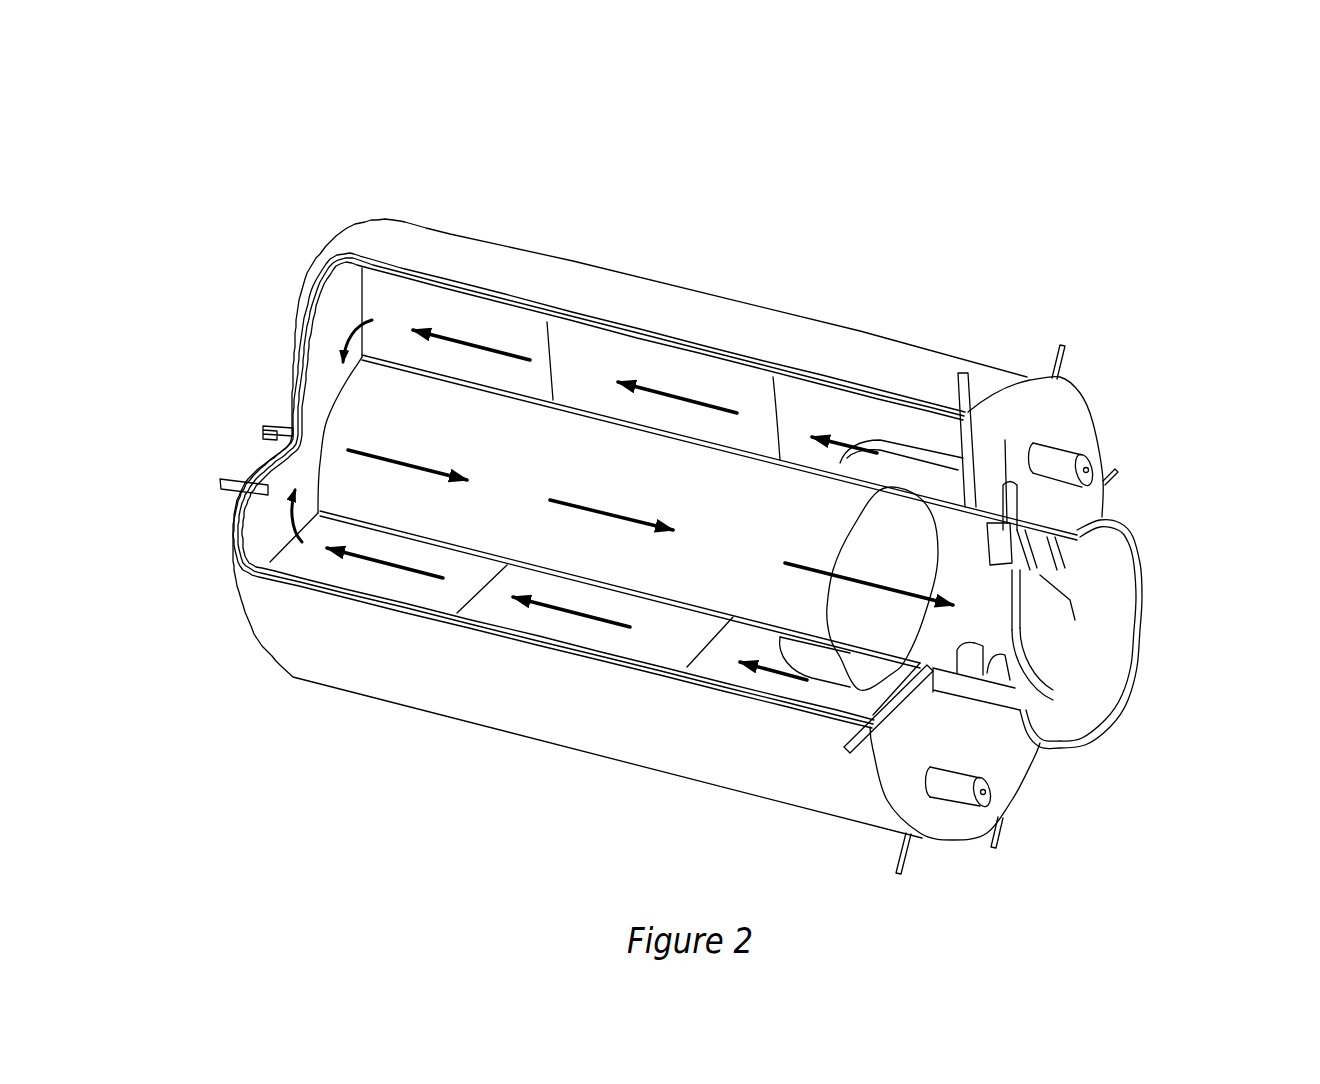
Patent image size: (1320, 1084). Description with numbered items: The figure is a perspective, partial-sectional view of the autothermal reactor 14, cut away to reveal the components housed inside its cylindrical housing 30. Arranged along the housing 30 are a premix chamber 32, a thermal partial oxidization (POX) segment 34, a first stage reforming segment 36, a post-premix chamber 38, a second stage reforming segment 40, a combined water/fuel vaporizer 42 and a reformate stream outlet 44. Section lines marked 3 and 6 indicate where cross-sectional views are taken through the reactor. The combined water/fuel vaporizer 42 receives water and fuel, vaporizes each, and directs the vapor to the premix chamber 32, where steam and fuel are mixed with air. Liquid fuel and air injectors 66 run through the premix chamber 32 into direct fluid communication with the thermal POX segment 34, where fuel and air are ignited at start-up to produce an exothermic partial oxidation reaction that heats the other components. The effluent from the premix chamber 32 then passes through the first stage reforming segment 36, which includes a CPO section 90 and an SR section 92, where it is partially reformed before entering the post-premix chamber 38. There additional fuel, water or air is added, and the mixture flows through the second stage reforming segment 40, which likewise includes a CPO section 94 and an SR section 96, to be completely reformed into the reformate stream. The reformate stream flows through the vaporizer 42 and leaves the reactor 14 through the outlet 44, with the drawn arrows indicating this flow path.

The cylindrical housing 30 is at (350, 233).
The SR section 92 is at (447, 310).
The first stage reforming segment 36 is at (635, 330).
The CPO section 90 is at (702, 370).
The thermal partial oxidization (POX) segment 34 is at (837, 400).
The post-premix chamber 38 is at (323, 320).
The second stage reforming segment 40 is at (332, 413).
The autothermal reactor 14 is at (495, 812).
The CPO section 94 is at (473, 525).
The SR section 96 is at (748, 588).
The premix chamber 32 is at (1070, 408).
The liquid fuel and air injectors 66 is at (1073, 447).
The combined water/fuel vaporizer 42 is at (1087, 560).
The reformate stream outlet 44 is at (1123, 587).
The section line 3- 3 is at (1180, 662).
The section line 6- 6 is at (1047, 605).